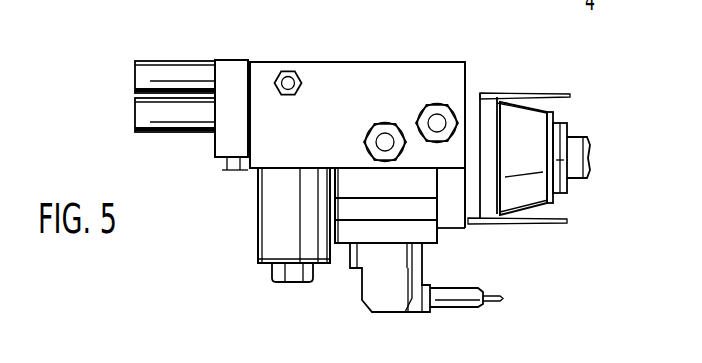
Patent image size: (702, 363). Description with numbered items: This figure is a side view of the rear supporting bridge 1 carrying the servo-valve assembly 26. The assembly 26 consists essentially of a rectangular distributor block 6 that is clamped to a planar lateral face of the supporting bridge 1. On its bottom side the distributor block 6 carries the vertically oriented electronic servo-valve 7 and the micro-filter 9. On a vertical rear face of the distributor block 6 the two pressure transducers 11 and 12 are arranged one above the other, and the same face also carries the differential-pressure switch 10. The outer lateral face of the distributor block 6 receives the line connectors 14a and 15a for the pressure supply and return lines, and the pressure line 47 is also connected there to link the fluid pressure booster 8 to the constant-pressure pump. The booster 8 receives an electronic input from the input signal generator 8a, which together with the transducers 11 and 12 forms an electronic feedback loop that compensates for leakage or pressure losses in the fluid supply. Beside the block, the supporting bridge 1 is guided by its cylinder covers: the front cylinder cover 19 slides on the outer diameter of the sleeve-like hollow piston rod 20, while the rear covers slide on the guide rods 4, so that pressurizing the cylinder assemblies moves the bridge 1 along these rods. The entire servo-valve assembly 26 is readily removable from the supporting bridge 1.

The rear supporting bridge 1 is at (452, 217).
The guide rods 4 is at (583, 151).
The distributor block 6 is at (283, 155).
The electronic servo-valve 7 is at (345, 182).
The fluid pressure booster 8 is at (377, 288).
The input signal generator 8a is at (463, 297).
The micro-filter 9 is at (280, 245).
The differential-pressure switch 10 is at (228, 140).
The pressure transducer 11 is at (145, 70).
The pressure transducer 12 is at (147, 111).
The line connector 14a is at (380, 133).
The line connector 15a is at (434, 108).
The front cylinder cover 19 is at (532, 187).
The hollow piston rod 20 is at (560, 185).
The servo-valve assembly 26 is at (367, 62).
The pressure line 47 is at (288, 72).